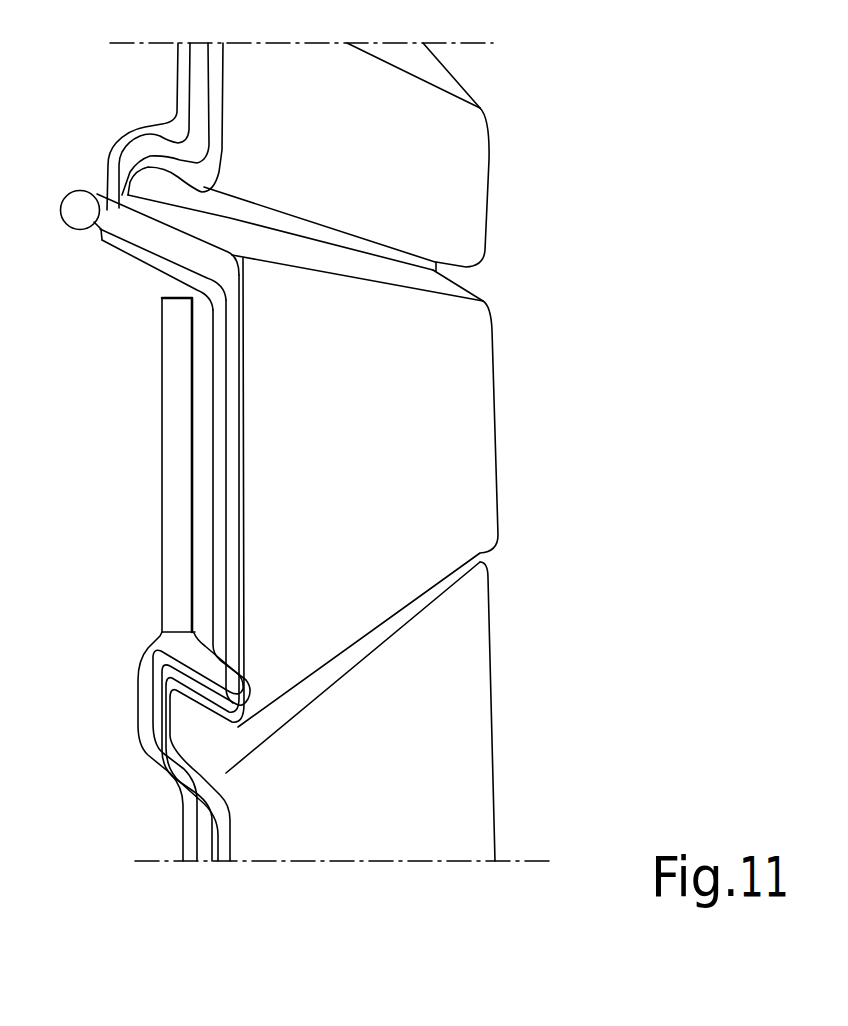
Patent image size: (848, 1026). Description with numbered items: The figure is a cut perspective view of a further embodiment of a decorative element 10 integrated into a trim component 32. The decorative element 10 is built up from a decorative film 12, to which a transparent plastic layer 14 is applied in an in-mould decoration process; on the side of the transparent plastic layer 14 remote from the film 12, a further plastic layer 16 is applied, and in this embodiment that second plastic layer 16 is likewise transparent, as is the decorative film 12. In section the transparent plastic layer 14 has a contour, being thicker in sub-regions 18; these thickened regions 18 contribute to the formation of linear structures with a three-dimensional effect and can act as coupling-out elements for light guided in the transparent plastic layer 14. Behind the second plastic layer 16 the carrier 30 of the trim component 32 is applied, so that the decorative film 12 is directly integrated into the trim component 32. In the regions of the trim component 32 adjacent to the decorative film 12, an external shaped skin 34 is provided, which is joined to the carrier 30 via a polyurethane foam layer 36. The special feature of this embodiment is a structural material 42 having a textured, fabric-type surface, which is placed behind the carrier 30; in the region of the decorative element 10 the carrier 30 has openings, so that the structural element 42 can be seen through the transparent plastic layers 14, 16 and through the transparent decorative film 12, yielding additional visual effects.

The decorative element 10 is at (362, 452).
The film 12 is at (470, 345).
The transparent plastic layer 14 is at (227, 302).
The further plastic layer 16 is at (196, 263).
The sub-region 18 is at (227, 500).
The carrier part 30 is at (145, 717).
The trim component 32 is at (339, 711).
The external shaped skin 34 is at (470, 683).
The polyurethane foam layer 36 is at (205, 838).
The structural material 42 is at (175, 500).